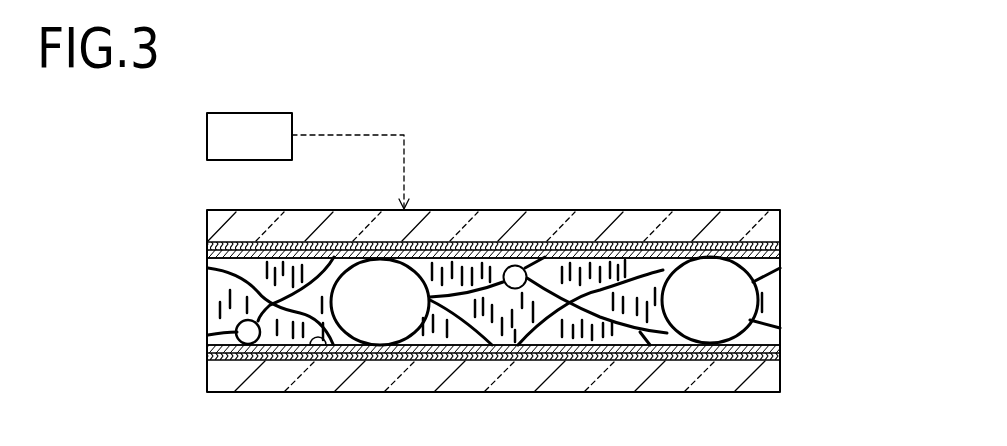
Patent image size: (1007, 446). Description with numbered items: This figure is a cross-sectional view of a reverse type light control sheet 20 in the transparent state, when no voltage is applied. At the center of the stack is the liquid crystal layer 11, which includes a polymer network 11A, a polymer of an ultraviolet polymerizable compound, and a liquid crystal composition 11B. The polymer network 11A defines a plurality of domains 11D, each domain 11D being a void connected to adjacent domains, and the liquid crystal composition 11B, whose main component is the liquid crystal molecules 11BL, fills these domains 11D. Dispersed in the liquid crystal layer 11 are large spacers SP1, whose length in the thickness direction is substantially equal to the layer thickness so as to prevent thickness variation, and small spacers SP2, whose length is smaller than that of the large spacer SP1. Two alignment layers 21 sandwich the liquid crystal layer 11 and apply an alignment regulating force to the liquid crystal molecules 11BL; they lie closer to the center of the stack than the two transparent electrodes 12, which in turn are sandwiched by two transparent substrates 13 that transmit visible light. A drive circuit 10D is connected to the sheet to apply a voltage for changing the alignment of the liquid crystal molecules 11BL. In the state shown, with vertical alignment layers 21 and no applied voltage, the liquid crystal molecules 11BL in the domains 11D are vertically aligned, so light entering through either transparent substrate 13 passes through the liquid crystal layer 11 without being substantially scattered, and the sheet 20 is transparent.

The reverse type light control sheet 20 is at (873, 198).
The drive circuit 10D is at (207, 136).
The transparent substrate 13 is at (780, 226).
The transparent electrode 12 is at (207, 245).
The alignment layer 21 is at (780, 252).
The liquid crystal layer 11 is at (207, 305).
The polymer network 11A is at (318, 263).
The liquid crystal composition 11B is at (532, 343).
The liquid crystal molecules 11BL is at (643, 272).
The domain 11D is at (317, 348).
The large spacer SP1 is at (723, 270).
The small spacer SP2 is at (510, 265).